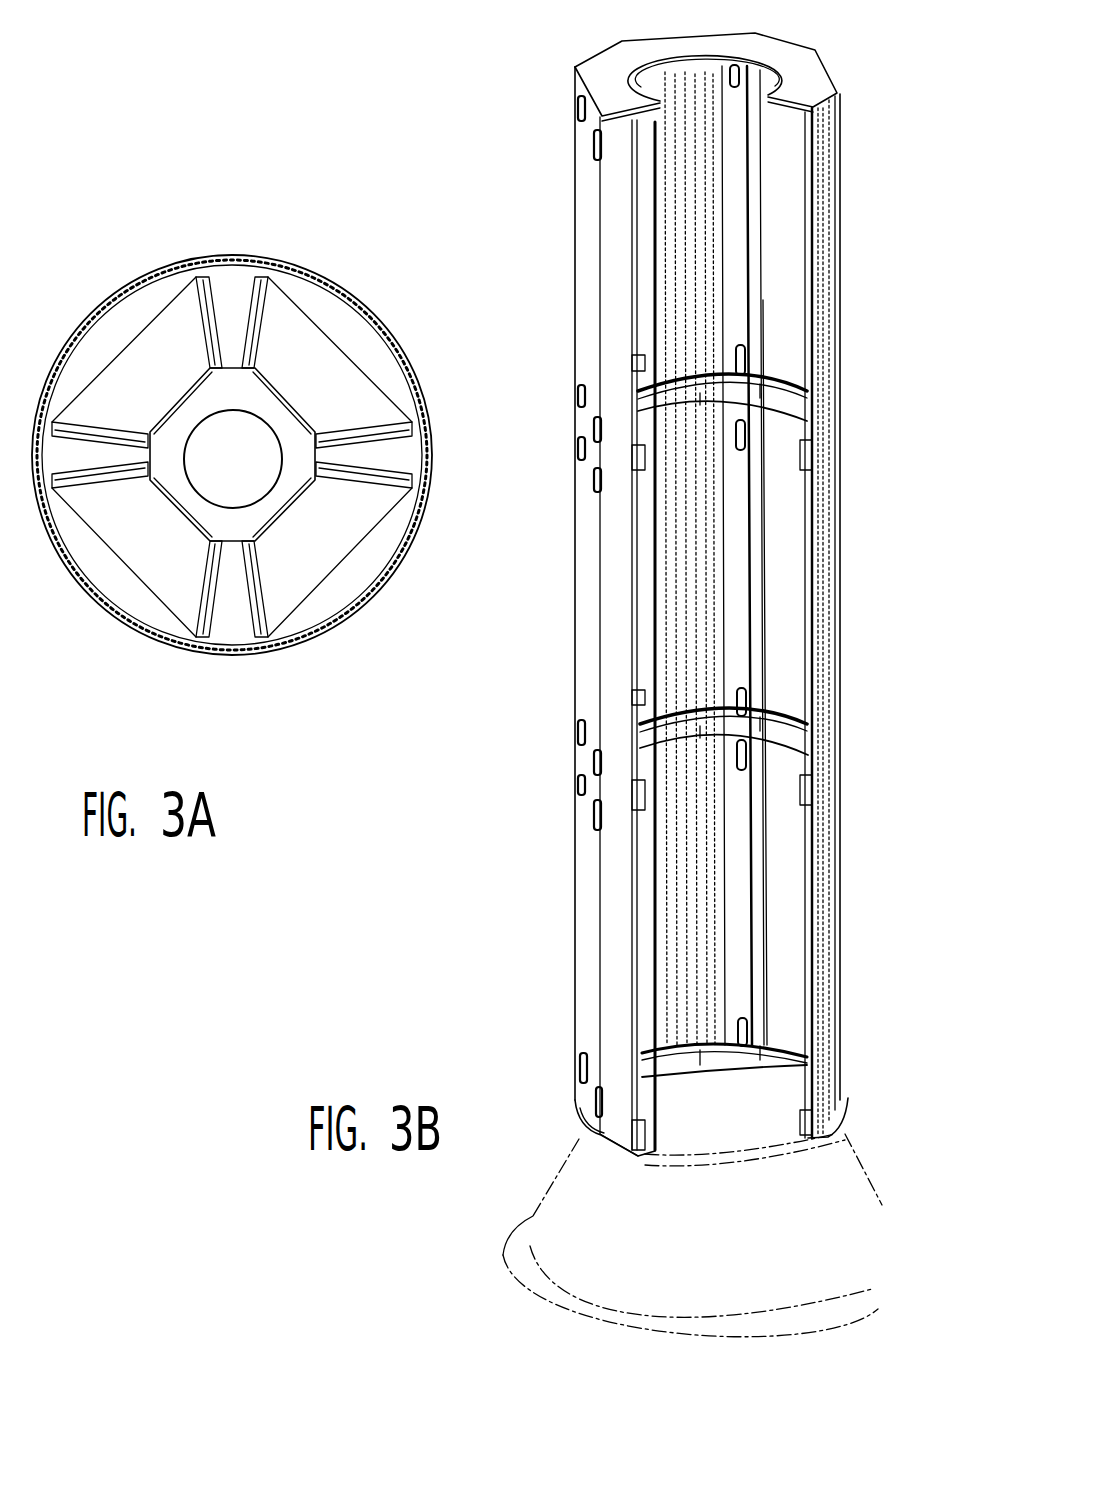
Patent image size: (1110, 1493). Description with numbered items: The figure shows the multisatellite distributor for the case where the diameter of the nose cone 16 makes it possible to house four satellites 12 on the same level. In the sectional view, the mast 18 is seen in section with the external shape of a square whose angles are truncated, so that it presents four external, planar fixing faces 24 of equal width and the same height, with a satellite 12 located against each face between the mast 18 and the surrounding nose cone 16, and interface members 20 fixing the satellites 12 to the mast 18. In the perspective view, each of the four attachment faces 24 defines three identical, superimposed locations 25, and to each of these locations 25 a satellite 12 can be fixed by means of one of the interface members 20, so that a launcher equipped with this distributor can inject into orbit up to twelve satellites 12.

In FIG. 3A, the satellites 12 is at (162, 331).
In FIG. 3A, the nose cone 16 is at (229, 263).
In FIG. 3A, the mast 18 is at (321, 634).
In FIG. 3B, the mast 18 is at (558, 52).
In FIG. 3A, the interface members 20 is at (162, 418).
In FIG. 3B, the fixing faces 24 is at (725, 29).
In FIG. 3B, the locations 25 is at (585, 270).